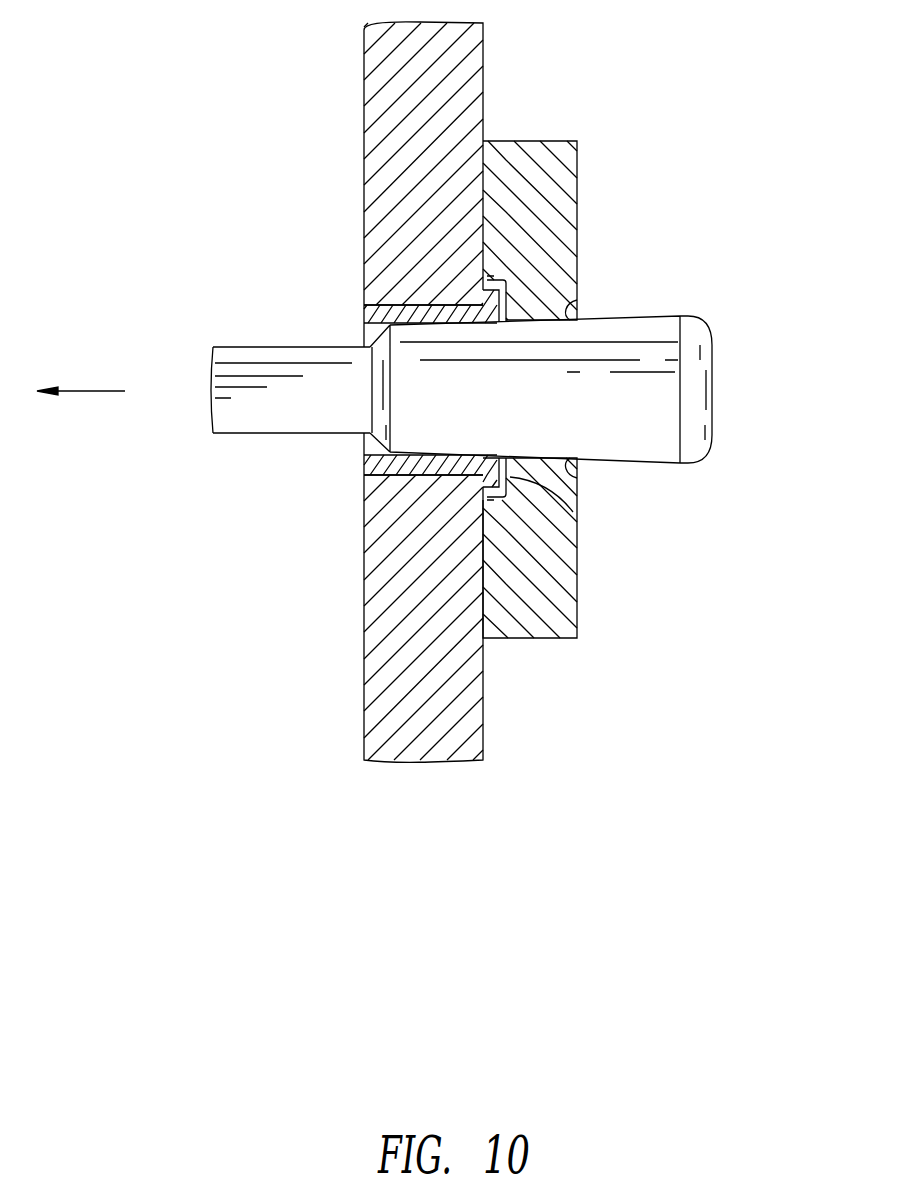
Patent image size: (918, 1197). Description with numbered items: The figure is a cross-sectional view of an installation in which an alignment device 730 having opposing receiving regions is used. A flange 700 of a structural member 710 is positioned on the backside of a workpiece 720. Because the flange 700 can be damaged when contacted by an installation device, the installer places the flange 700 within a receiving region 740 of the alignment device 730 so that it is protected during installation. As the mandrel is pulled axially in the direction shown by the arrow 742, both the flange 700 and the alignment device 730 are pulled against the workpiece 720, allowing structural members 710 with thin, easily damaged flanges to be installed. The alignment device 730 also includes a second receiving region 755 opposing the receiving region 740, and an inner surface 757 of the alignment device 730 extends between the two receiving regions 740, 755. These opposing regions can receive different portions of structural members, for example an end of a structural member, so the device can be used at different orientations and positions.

The flange 700 is at (575, 523).
The structural member 710 is at (364, 473).
The workpiece 720 is at (483, 52).
The alignment device 730 is at (577, 170).
The receiving region 740 is at (492, 272).
The arrow 742 is at (80, 391).
The receiving region 755 is at (577, 308).
The inner surface 757 is at (573, 483).